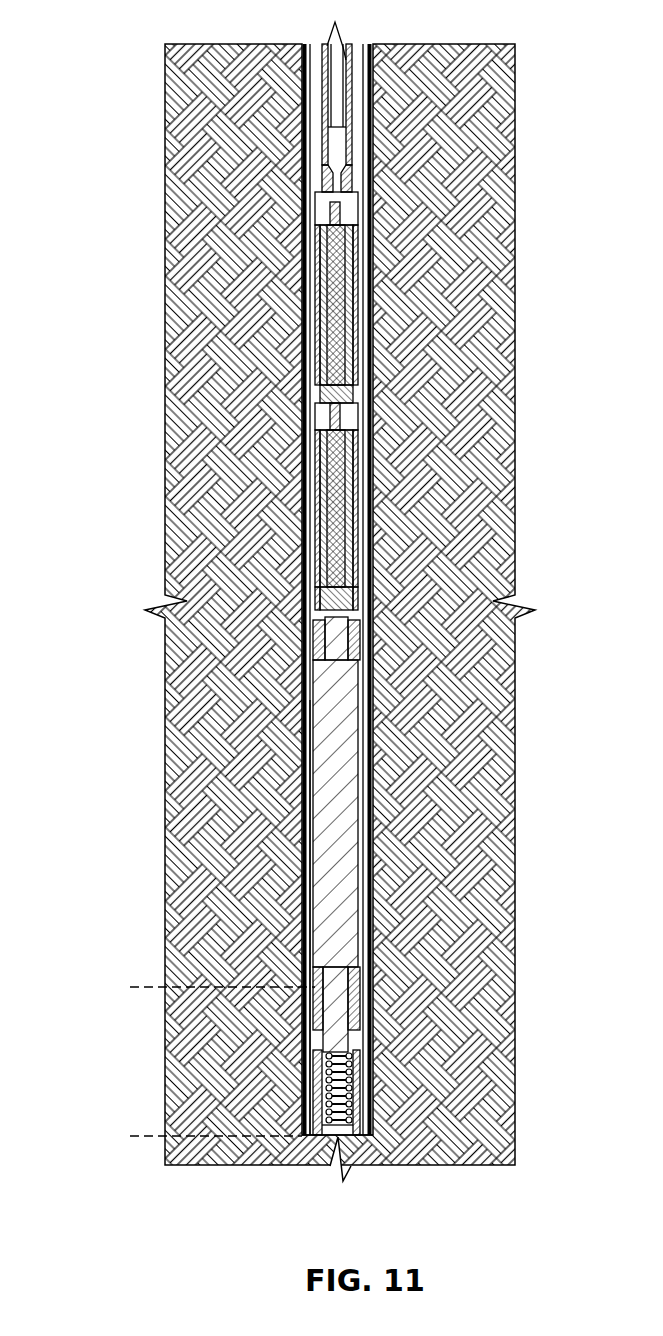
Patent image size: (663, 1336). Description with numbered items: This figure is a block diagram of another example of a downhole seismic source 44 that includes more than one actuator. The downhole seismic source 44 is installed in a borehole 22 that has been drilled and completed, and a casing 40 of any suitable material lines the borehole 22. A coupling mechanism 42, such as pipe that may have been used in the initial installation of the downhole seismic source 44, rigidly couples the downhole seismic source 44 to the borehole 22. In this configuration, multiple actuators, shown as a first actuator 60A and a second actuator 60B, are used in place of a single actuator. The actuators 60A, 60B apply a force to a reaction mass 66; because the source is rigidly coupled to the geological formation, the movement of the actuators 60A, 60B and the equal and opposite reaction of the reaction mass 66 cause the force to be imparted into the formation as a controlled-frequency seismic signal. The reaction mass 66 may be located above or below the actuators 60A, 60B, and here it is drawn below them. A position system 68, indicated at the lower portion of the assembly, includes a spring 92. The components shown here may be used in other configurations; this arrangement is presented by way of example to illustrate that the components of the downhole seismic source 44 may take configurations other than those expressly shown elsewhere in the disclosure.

The borehole 22 is at (296, 78).
The casing 40 is at (370, 143).
The coupling mechanism 42 is at (356, 98).
The downhole seismic source 44 is at (283, 936).
The actuator 60A is at (376, 287).
The actuator 60B is at (376, 464).
The reaction mass 66 is at (370, 698).
The position system 68 is at (130, 987).
The spring 92 is at (356, 1083).